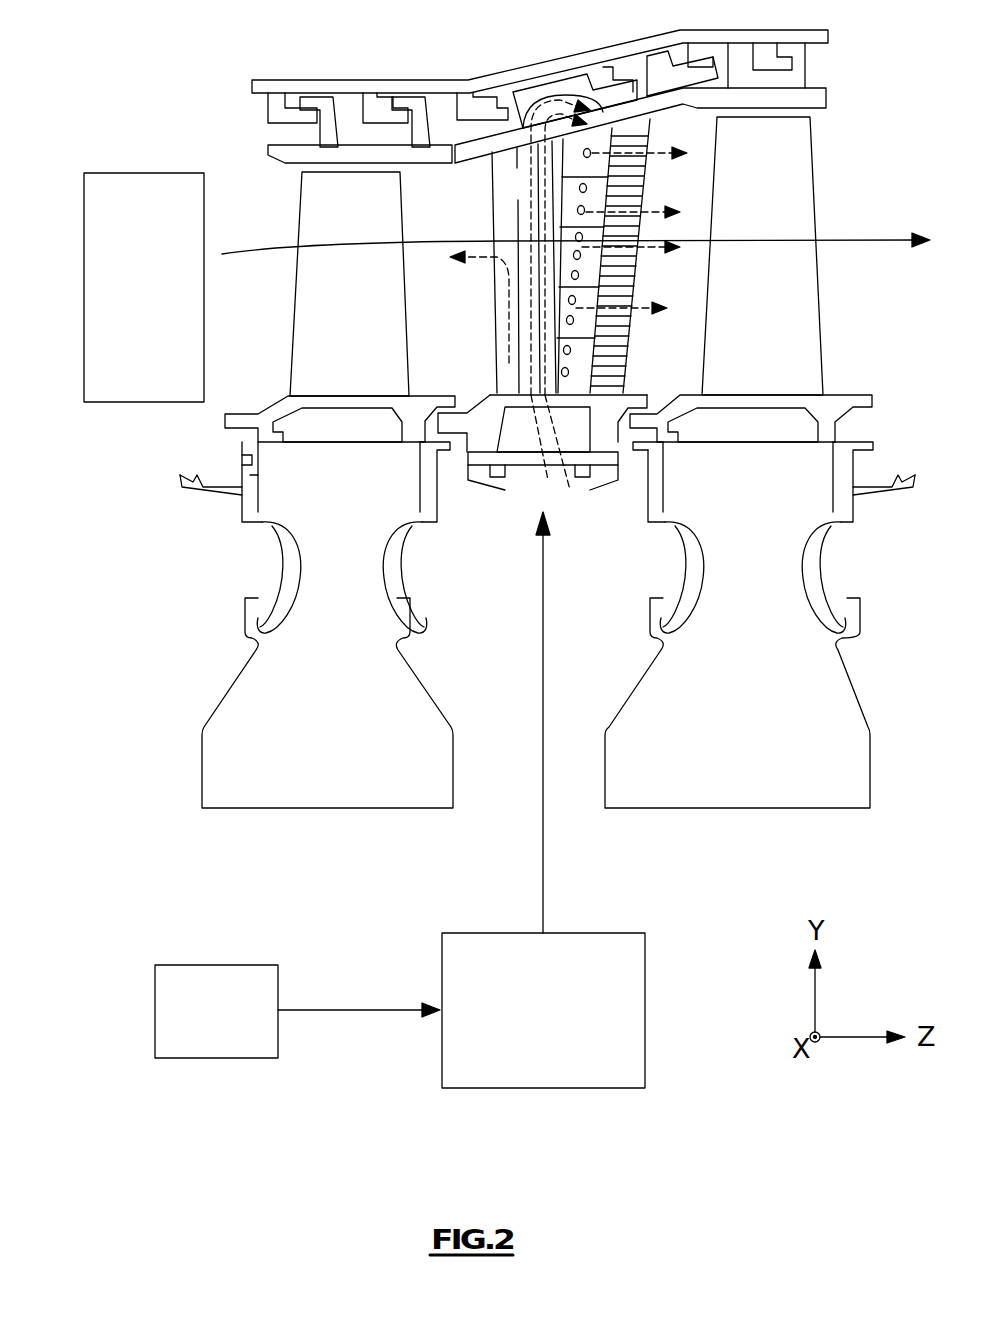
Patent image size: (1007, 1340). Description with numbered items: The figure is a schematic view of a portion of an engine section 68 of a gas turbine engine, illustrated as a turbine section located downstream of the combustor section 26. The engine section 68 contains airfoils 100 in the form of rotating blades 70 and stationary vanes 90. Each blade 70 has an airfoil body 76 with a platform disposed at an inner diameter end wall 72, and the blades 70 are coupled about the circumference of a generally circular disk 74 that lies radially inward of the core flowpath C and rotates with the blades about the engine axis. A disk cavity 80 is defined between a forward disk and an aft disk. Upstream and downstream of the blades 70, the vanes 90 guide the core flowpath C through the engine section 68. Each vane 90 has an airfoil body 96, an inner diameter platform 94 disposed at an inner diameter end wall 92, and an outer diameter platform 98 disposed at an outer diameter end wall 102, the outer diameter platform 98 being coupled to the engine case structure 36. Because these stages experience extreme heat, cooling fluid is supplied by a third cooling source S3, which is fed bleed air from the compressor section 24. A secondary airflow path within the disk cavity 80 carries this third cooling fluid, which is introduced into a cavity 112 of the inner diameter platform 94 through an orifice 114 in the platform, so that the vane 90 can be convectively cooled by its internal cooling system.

The engine section 68 is at (82, 99).
The combustor section 26 is at (158, 298).
The engine case structure 36 is at (312, 88).
The airfoils 100 is at (862, 122).
The blade 70 is at (547, 448).
The airfoil body 76 is at (365, 350).
The inner diameter end wall 72 is at (717, 393).
The disk 74 is at (423, 707).
The disk cavity 80 is at (630, 672).
The vane 90 is at (579, 466).
The airfoil body 96 is at (530, 199).
The inner diameter end wall 92 is at (610, 390).
The inner diameter platform 94 is at (485, 417).
The outer diameter platform 98 is at (643, 87).
The outer diameter end wall 102 is at (500, 157).
The cavity 112 is at (577, 442).
The orifice 114 is at (545, 453).
The core flowpath C is at (273, 252).
The compressor section 24 is at (231, 1024).
The third cooling source S3 is at (600, 1088).